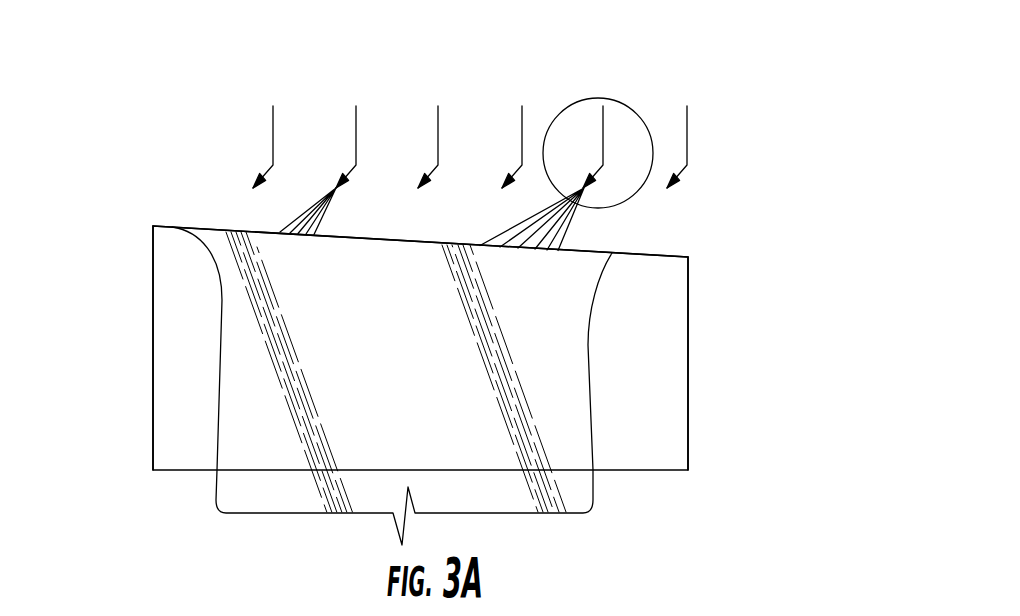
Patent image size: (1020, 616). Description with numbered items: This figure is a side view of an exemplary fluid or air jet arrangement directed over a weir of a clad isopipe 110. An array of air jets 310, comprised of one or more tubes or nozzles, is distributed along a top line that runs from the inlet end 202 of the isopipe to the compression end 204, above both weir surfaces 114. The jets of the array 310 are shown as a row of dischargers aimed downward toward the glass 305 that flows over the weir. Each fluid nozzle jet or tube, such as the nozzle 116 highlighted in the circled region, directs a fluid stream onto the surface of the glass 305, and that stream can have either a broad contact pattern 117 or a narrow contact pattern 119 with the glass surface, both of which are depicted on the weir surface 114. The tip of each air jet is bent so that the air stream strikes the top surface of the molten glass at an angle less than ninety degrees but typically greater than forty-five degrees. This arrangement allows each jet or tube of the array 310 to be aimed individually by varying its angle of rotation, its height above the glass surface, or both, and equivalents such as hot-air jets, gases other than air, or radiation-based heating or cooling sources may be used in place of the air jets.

The clad isopipe 110 is at (662, 327).
The weir surface 114 is at (660, 252).
The nozzle 116 is at (624, 101).
The broad contact pattern 117 is at (521, 223).
The narrow contact pattern 119 is at (308, 234).
The inlet end 202 is at (152, 355).
The compression end 204 is at (689, 413).
The glass 305 is at (239, 428).
The array of air jets 310 is at (742, 107).